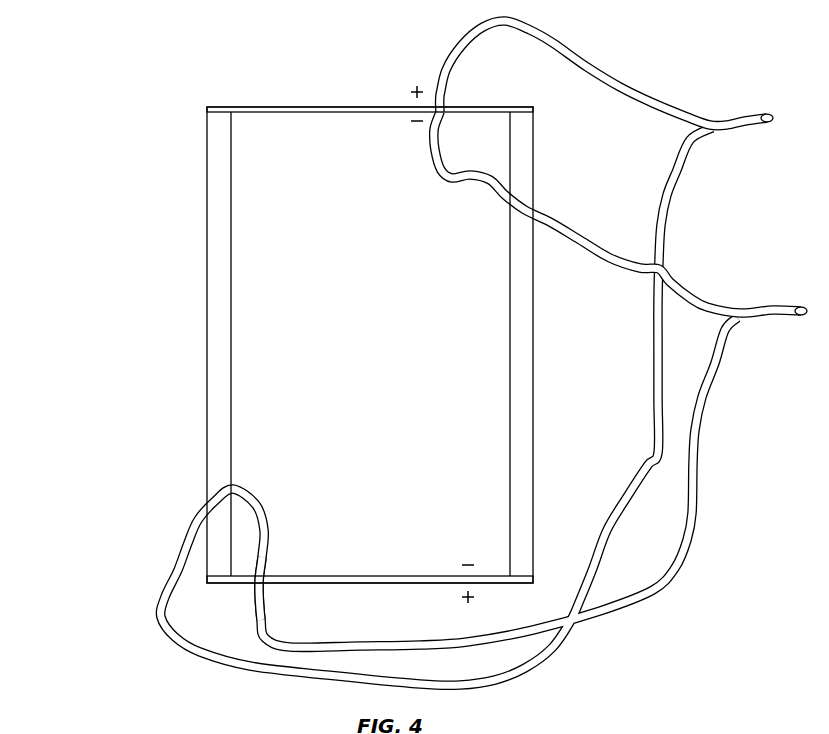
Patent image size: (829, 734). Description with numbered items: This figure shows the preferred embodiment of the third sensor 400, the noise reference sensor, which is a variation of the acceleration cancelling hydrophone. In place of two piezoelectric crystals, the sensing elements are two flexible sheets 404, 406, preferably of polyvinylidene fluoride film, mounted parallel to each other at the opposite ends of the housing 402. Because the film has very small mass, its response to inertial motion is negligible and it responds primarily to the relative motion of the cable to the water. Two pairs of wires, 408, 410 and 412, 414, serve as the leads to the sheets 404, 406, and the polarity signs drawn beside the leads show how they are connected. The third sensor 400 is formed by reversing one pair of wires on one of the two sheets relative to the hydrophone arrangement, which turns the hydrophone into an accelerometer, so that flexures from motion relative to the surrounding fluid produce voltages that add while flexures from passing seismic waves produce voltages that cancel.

The third sensor 400 is at (110, 90).
The housing 402 is at (534, 340).
The flexible sheet 404 is at (260, 106).
The flexible sheet 406 is at (344, 586).
The wire 408 is at (564, 216).
The wire 410 is at (575, 60).
The wire 412 is at (155, 627).
The wire 414 is at (253, 598).